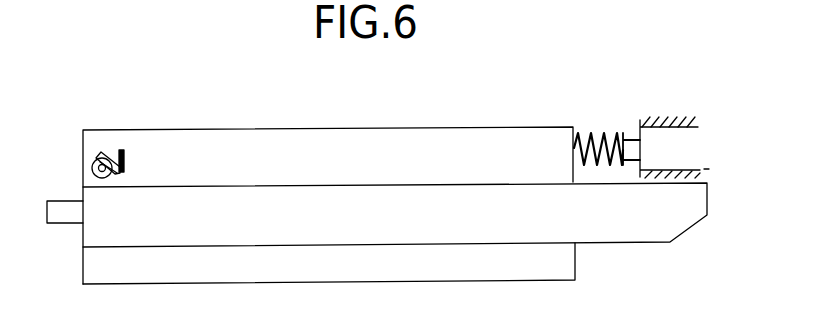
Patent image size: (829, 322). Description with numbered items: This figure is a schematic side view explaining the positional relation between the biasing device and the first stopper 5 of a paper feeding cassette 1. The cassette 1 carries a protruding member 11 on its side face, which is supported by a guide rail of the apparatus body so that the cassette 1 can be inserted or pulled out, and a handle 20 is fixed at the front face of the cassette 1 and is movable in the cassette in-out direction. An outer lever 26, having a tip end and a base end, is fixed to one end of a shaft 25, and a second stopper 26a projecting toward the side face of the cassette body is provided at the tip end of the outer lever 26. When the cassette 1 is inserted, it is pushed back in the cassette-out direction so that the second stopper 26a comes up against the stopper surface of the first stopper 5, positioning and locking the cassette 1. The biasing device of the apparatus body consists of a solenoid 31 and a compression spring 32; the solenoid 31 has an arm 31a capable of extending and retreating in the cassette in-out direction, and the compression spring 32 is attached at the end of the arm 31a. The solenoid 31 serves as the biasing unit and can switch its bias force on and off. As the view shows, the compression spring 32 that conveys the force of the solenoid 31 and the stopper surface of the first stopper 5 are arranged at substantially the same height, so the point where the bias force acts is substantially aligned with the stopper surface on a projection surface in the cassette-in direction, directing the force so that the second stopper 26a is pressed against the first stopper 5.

The cassette 1 is at (325, 128).
The first stopper 5 is at (122, 151).
The protruding member 11 is at (628, 232).
The handle 20 is at (60, 222).
The shaft 25 is at (104, 178).
The outer lever 26 is at (92, 165).
The second stopper 26a is at (127, 169).
The solenoid 31 is at (666, 128).
The arm 31a is at (622, 133).
The compression spring 32 is at (588, 132).